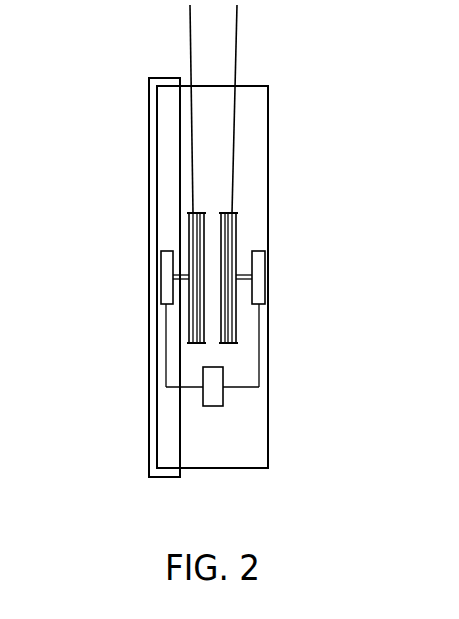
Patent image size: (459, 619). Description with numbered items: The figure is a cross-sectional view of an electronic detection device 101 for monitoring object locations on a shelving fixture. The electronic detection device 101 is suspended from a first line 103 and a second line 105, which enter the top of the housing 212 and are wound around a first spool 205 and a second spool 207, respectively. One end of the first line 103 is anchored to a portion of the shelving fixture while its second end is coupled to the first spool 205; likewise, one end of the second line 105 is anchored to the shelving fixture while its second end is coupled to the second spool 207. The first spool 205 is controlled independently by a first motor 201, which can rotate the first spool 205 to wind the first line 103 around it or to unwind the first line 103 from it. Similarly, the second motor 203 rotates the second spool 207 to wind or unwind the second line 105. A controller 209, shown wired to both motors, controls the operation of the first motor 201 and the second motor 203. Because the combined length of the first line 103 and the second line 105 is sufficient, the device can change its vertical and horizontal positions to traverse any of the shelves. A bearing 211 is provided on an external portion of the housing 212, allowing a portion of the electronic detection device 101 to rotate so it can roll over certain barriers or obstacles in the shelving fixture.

The electronic detection device 101 is at (193, 241).
The first line 103 is at (182, 60).
The second line 105 is at (242, 59).
The first motor 201 is at (157, 272).
The second motor 203 is at (268, 273).
The first spool 205 is at (184, 338).
The second spool 207 is at (243, 338).
The controller 209 is at (233, 402).
The bearing 211 is at (143, 439).
The housing 212 is at (277, 156).